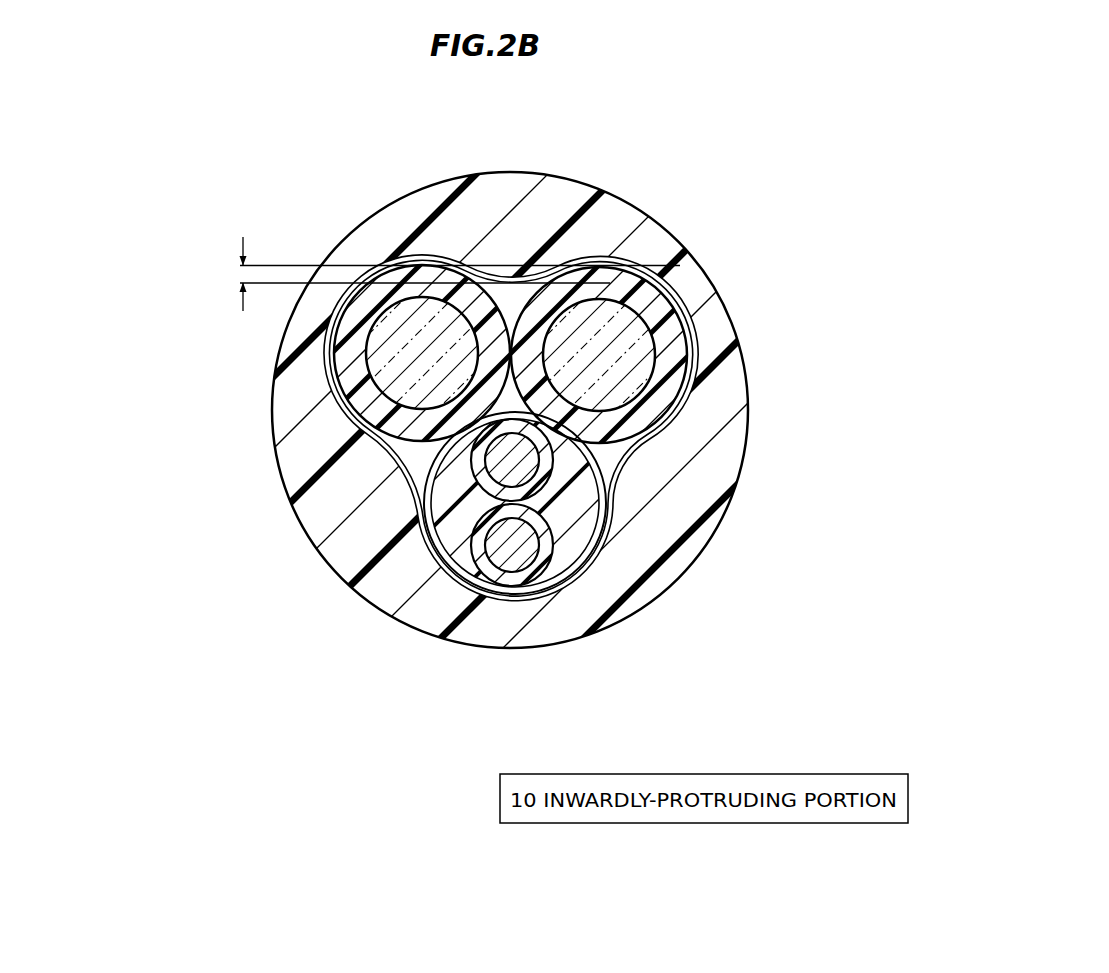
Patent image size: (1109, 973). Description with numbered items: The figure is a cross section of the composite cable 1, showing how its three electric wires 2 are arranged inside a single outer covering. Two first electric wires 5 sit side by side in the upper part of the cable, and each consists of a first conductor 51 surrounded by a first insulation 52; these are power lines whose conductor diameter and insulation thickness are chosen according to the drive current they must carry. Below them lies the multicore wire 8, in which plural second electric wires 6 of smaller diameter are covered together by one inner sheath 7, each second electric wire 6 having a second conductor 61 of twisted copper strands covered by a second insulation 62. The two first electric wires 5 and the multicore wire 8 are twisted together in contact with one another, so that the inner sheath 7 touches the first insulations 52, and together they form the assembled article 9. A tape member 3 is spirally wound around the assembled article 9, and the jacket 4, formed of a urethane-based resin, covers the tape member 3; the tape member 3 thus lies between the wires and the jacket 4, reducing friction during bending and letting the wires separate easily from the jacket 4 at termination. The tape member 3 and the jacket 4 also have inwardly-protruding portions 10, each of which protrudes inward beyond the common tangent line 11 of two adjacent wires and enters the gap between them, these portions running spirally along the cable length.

The composite cable 1 is at (348, 180).
The electric wire 2 is at (623, 261).
The tape member 3 is at (672, 403).
The jacket 4 is at (730, 380).
The first electric wire 5 is at (537, 450).
The first conductor 51 is at (622, 318).
The first insulation 52 is at (685, 332).
The second electric wire 6 is at (564, 450).
The second conductor 61 is at (507, 563).
The second insulation 62 is at (516, 572).
The inner sheath 7 is at (553, 577).
The multicore wire 8 is at (560, 450).
The assembled article 9 is at (621, 444).
The inwardly-protruding portion 10 is at (502, 271).
The common tangent line 11 is at (301, 262).